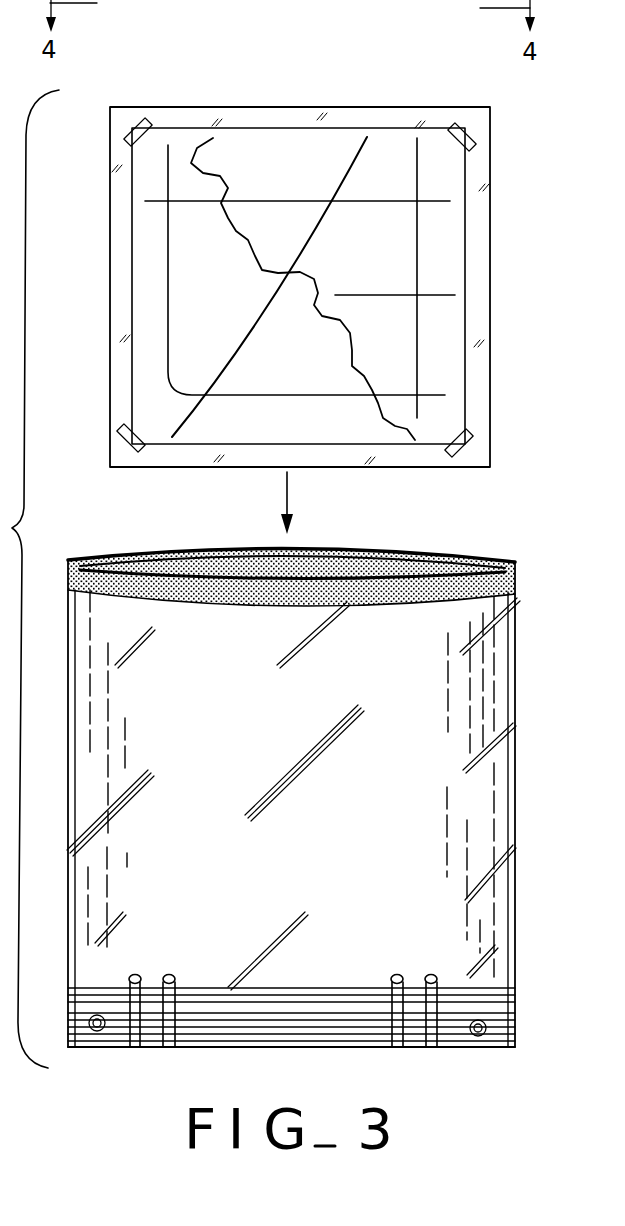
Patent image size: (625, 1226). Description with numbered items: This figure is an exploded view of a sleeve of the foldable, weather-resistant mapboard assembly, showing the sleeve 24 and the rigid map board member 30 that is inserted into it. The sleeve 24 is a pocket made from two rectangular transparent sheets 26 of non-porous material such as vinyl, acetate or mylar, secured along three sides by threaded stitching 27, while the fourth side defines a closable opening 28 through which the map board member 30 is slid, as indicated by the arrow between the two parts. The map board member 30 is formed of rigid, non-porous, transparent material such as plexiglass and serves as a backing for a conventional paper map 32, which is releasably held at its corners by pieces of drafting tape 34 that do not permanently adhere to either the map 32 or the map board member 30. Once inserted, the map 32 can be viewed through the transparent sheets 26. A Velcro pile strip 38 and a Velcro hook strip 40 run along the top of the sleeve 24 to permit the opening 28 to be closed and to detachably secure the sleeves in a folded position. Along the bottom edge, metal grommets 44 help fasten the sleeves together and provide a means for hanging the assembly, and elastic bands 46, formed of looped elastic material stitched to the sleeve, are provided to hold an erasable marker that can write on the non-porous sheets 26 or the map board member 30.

The outer sleeve 24 is at (530, 886).
The transparent sheet 26 is at (445, 689).
The threaded stitching 27 is at (508, 770).
The closable opening 28 is at (319, 578).
The map board member 30 is at (477, 248).
The paper map 32 is at (338, 150).
The drafting tape 34 is at (453, 126).
The Velcro pile strip 38 is at (213, 557).
The Velcro hook strip 40 is at (95, 558).
The metal grommet 44 is at (97, 1032).
The elastic band 46 is at (170, 975).